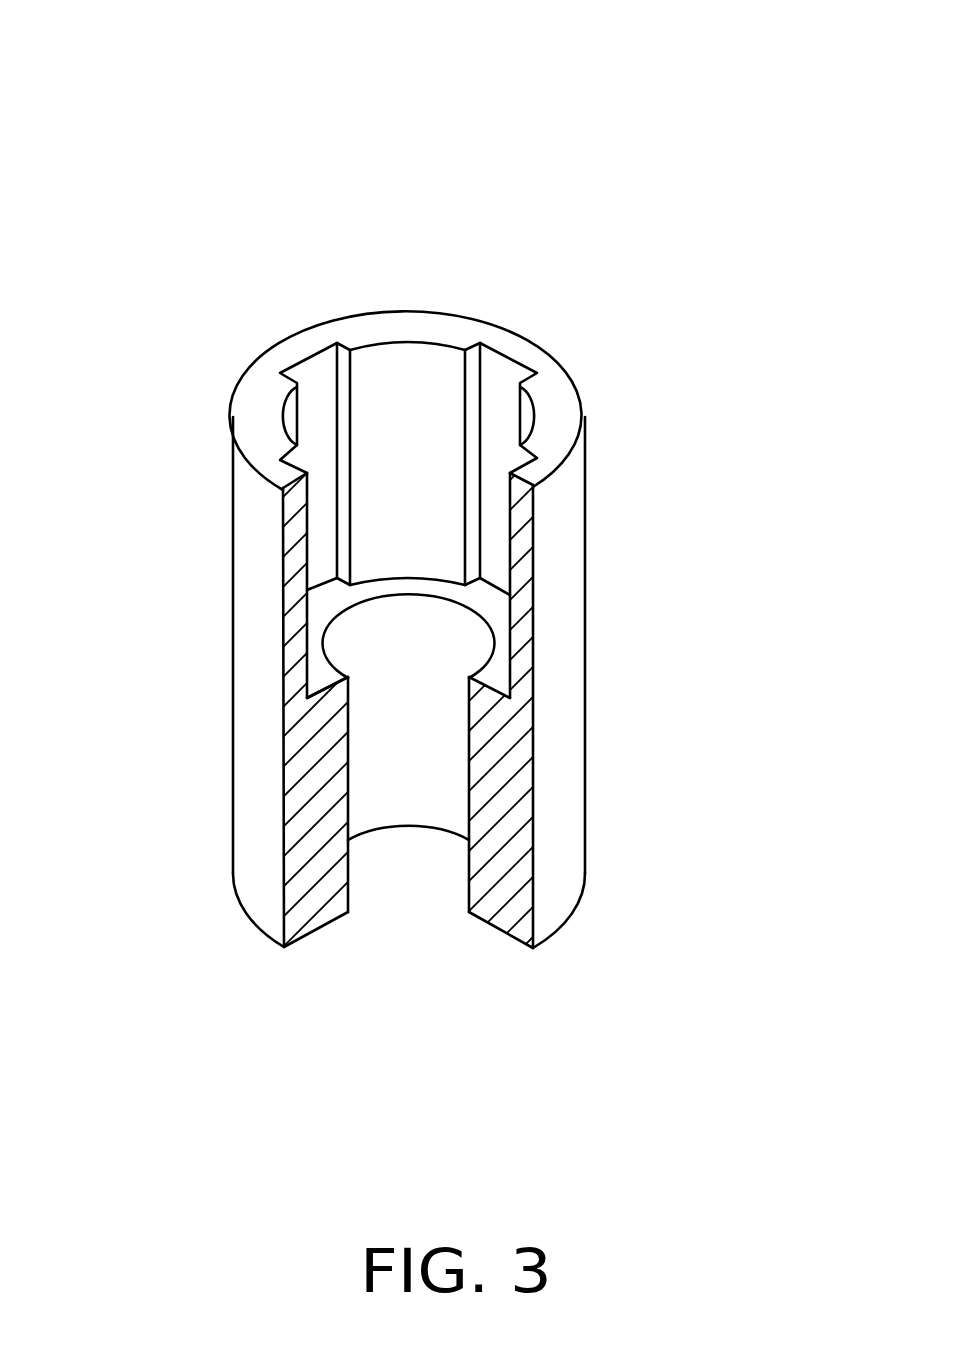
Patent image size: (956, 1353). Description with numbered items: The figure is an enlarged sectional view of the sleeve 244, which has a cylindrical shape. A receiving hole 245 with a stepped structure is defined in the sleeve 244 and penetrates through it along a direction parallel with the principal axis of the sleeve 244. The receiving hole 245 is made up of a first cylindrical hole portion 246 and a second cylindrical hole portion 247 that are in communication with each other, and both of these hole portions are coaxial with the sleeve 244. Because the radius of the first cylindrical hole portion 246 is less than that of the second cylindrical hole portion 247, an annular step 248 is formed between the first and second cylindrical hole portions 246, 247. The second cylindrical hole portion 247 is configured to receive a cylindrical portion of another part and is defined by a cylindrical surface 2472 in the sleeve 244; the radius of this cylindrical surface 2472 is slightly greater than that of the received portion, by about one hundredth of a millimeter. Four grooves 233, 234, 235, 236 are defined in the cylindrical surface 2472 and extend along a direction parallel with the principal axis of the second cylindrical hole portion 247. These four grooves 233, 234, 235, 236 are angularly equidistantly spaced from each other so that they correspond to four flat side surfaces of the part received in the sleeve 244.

The sleeve 244 is at (456, 503).
The cylindrical surface 2472 is at (418, 402).
The groove 236 is at (308, 366).
The groove 235 is at (500, 373).
The groove 233 is at (284, 460).
The groove 234 is at (522, 460).
The annular step 248 is at (317, 675).
The receiving hole 245 is at (725, 683).
The second cylindrical hole portion 247 is at (408, 543).
The first cylindrical hole portion 246 is at (425, 767).